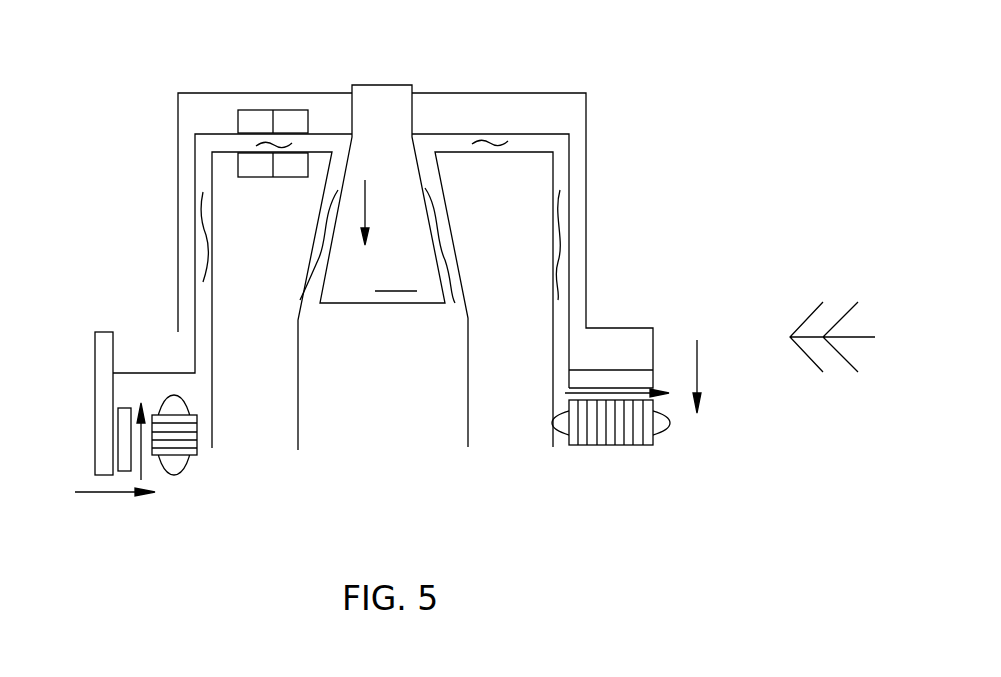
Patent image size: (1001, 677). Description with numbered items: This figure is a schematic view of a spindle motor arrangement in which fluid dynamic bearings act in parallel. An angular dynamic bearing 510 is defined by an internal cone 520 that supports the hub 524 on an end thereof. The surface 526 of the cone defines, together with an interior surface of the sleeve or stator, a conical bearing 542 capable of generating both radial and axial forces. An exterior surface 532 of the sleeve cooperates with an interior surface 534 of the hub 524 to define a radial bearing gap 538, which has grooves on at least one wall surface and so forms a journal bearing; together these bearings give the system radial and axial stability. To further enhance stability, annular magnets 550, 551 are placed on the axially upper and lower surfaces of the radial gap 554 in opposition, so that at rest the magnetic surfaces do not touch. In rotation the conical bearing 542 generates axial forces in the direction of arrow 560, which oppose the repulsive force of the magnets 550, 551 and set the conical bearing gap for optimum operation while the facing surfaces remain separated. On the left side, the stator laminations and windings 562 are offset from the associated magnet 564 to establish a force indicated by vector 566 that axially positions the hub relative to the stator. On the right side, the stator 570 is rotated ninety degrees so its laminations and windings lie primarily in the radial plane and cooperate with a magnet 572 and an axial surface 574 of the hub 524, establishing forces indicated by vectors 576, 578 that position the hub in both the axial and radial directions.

The angular dynamic bearing 510 is at (450, 228).
The internal cone 520 is at (398, 180).
The hub 524 is at (578, 153).
The surface of the cone 526 is at (396, 280).
The exterior surface of the sleeve 532 is at (553, 302).
The interior surface of the hub 534 is at (569, 255).
The radial bearing gap 538 is at (202, 240).
The conical bearing 542 is at (327, 243).
The annular magnet 550 is at (275, 110).
The annular magnet 551 is at (272, 177).
The radial gap 554 is at (220, 143).
The arrow 560 is at (378, 203).
The stator laminations and windings 562 is at (173, 433).
The magnet 564 is at (117, 440).
The vector 566 is at (135, 415).
The stator 570 is at (613, 435).
The magnet 572 is at (647, 377).
The axial surface of hub 574 is at (617, 370).
The vector 576 is at (633, 397).
The vector 578 is at (698, 358).